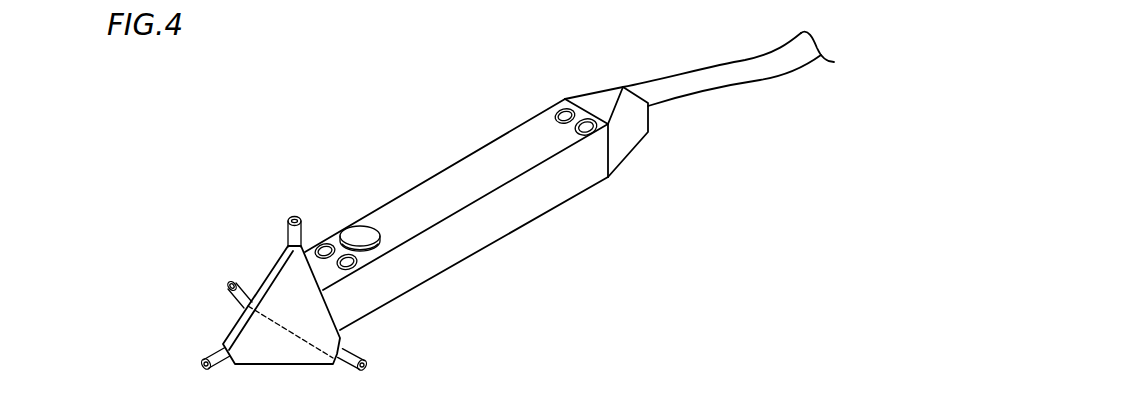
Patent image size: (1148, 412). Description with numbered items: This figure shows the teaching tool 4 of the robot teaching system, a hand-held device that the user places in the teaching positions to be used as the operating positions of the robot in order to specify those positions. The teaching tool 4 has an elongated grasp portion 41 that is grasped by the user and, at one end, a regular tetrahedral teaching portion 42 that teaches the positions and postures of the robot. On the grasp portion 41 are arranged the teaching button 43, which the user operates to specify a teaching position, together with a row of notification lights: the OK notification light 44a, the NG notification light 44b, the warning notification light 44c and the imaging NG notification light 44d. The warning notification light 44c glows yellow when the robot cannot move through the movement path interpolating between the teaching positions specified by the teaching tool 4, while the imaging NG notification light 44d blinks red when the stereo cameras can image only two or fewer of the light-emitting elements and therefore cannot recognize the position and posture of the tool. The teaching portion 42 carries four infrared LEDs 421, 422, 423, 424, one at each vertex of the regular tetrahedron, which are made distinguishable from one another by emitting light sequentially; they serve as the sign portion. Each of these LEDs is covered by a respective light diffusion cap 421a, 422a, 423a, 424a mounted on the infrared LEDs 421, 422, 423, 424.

The teaching tool 4 is at (468, 168).
The grasp portion 41 is at (417, 198).
The regular tetrahedral teaching portion 42 is at (260, 282).
The infrared LED 421 is at (202, 357).
The light diffusion cap 421a is at (200, 366).
The infrared LED 422 is at (286, 212).
The light diffusion cap 422a is at (288, 217).
The infrared LED 423 is at (232, 283).
The light diffusion cap 423a is at (230, 289).
The infrared LED 424 is at (363, 357).
The light diffusion cap 424a is at (367, 367).
The teaching button 43 is at (366, 232).
The OK notification light 44a is at (337, 248).
The NG notification light 44b is at (350, 265).
The warning notification light 44c is at (588, 130).
The imaging NG notification light 44d is at (566, 123).